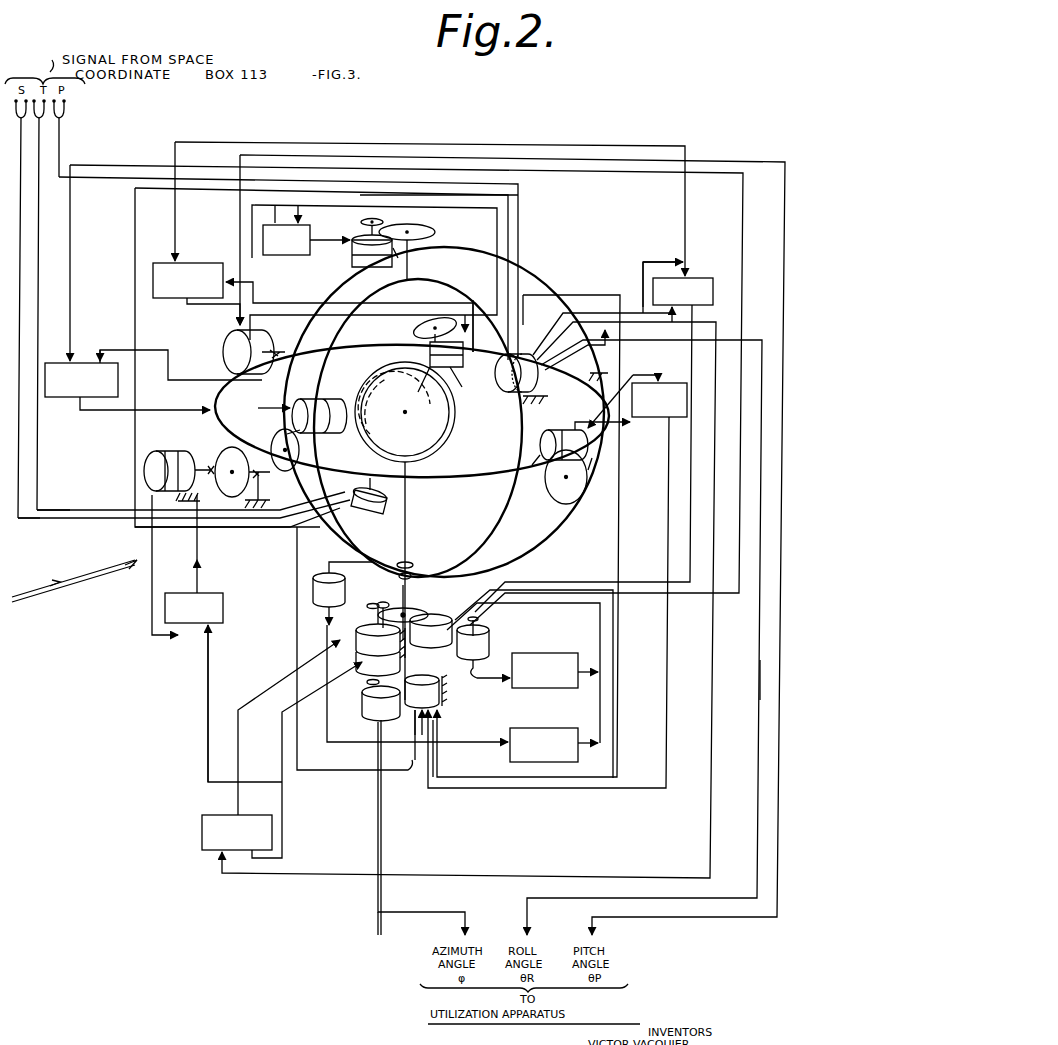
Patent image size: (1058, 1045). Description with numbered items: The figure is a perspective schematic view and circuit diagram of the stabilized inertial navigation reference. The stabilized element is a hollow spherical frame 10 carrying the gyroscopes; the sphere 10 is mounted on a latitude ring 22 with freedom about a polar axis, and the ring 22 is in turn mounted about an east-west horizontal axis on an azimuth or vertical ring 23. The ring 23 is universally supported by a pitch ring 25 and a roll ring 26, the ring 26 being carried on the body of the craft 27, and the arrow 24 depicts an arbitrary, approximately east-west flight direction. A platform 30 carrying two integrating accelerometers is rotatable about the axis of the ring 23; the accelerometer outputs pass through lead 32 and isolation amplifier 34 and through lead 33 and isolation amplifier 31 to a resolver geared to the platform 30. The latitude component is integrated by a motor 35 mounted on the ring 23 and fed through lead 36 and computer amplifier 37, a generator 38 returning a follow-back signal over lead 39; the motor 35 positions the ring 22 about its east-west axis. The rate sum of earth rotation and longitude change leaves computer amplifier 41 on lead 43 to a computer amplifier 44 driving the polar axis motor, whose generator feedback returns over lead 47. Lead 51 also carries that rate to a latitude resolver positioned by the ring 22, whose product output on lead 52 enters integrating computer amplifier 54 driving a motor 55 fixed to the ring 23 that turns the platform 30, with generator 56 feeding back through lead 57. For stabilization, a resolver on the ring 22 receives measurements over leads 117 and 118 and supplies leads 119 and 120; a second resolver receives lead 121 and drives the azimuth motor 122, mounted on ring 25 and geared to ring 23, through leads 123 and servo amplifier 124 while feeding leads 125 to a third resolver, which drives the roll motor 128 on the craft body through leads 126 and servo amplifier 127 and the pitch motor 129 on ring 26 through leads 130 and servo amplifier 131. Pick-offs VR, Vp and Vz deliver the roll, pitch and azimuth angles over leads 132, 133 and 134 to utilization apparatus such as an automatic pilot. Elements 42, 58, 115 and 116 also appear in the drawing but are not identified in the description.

The spherical frame 10 is at (444, 450).
The latitude ring 22 is at (418, 348).
The azimuth ring 23 is at (330, 342).
The arrow 24 is at (86, 575).
The pitch ring 25 is at (440, 258).
The roll ring 26 is at (194, 400).
The body of the craft 27 is at (268, 476).
The platform 30 is at (380, 590).
The isolation amplifier 31 is at (538, 692).
The lead 32 is at (360, 744).
The lead 33 is at (484, 678).
The isolation amplifier 34 is at (515, 730).
The latitude motor 35 is at (280, 402).
The lead 36 is at (70, 287).
The computer amplifier 37 is at (66, 400).
The generator 38 is at (330, 400).
The lead 39 is at (172, 368).
The computer amplifier 41 is at (700, 276).
The resolver output leads 42 is at (555, 590).
The lead 43 is at (532, 143).
The computer amplifier 44 is at (200, 259).
The lead 47 is at (290, 286).
The lead 51 is at (640, 262).
The lead 52 is at (720, 330).
The integrating computer amplifier 54 is at (200, 836).
The motor 55 is at (348, 643).
The generator 56 is at (352, 690).
The lead 57 is at (282, 758).
The resolver leads 58 is at (646, 320).
The lead 115 is at (462, 350).
The lead 116 is at (465, 377).
The lead 117 is at (36, 520).
The lead 118 is at (68, 510).
The leads 119 is at (358, 196).
The leads 120 is at (298, 606).
The lead 121 is at (522, 184).
The azimuth stabilization motor 122 is at (345, 235).
The leads 123 is at (442, 212).
The servo amplifier 124 is at (290, 216).
The leads 125 is at (620, 520).
The leads 126 is at (204, 704).
The servo amplifier 127 is at (226, 593).
The roll stabilization motor 128 is at (170, 452).
The pitch stabilization motor 129 is at (590, 445).
The leads 130 is at (562, 788).
The servo amplifier 131 is at (678, 375).
The lead 132 is at (760, 660).
The lead 133 is at (332, 143).
The lead 134 is at (383, 912).